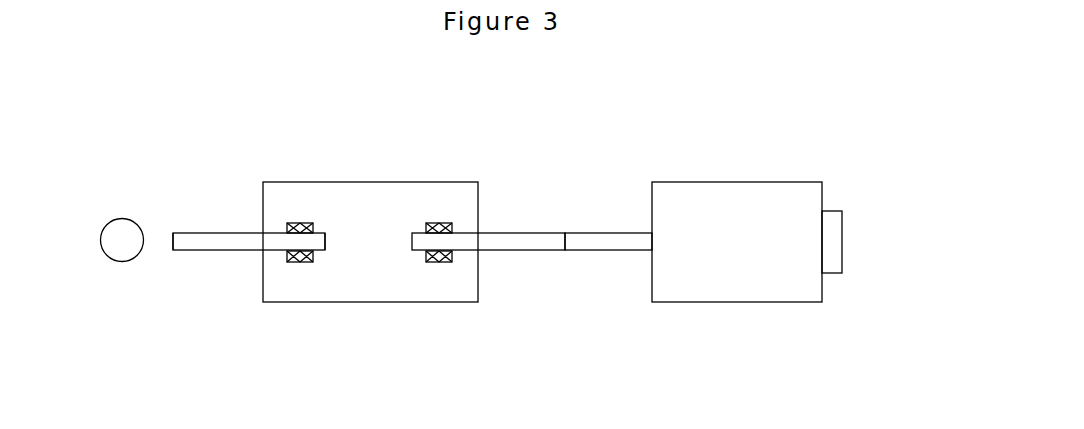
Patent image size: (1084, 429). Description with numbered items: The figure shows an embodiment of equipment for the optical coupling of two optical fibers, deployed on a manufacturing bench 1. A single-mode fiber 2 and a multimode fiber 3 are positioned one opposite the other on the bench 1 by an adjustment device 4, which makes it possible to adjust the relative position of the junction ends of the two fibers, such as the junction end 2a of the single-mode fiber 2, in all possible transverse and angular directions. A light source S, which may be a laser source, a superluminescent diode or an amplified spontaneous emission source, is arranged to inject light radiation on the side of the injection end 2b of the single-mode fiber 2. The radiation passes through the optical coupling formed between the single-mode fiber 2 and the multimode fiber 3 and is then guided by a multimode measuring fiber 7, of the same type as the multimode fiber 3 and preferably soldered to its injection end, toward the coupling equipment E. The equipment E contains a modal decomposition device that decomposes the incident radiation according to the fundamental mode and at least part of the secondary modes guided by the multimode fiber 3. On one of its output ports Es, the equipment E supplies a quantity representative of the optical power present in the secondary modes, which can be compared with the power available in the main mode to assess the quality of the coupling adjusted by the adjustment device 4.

The manufacturing bench 1 is at (348, 291).
The single-mode fiber 2 is at (218, 250).
The junction end of the single-mode fiber 2a is at (327, 239).
The injection end of the single-mode fiber 2b is at (172, 238).
The multimode fiber 3 is at (537, 250).
The adjustment device 4 is at (300, 223).
The multimode measuring fiber 7 is at (613, 229).
The coupling equipment E is at (737, 242).
The output port Es is at (850, 265).
The light source S is at (122, 240).